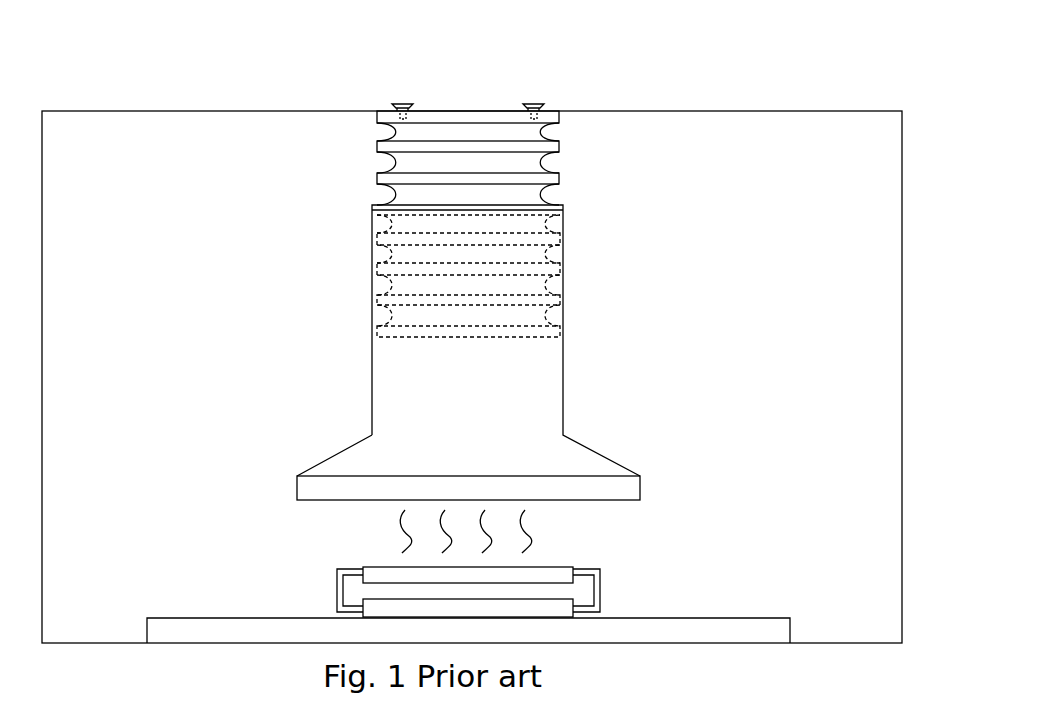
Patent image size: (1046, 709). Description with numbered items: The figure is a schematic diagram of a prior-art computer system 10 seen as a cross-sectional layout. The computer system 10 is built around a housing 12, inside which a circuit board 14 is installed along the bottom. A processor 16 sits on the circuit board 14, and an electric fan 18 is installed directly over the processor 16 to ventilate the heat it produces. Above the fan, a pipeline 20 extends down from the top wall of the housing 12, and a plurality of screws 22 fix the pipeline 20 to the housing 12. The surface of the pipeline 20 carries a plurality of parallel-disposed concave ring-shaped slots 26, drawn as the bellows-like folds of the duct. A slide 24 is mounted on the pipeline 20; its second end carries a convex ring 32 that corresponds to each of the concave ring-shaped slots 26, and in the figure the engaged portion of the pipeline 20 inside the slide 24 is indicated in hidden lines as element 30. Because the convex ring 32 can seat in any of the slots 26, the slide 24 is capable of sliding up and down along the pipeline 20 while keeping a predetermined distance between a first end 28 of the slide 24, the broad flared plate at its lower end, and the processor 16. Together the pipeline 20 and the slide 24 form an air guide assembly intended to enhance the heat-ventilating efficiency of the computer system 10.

The computer system 10 is at (773, 102).
The housing 12 is at (903, 197).
The circuit board 14 is at (179, 627).
The processor 16 is at (553, 608).
The electric fan 18 is at (550, 580).
The pipeline 20 is at (478, 158).
The screws 22 is at (400, 104).
The slide 24 is at (547, 355).
The concave ring-shaped slots 26 is at (405, 162).
The first end 28 is at (628, 490).
The inner bellows 30 is at (468, 275).
The convex ring 32 is at (380, 225).